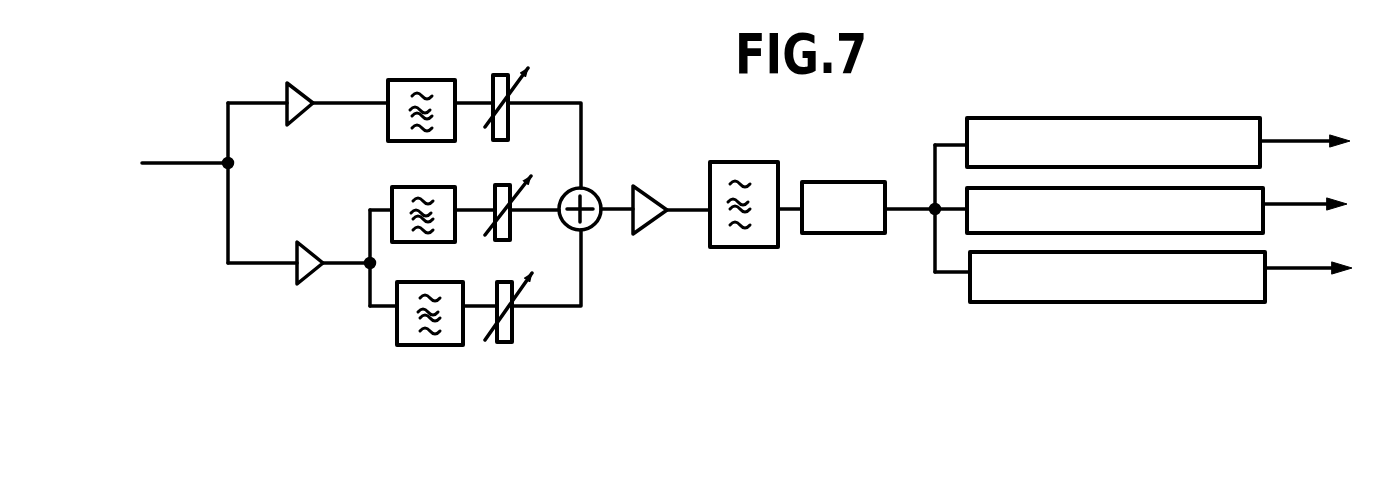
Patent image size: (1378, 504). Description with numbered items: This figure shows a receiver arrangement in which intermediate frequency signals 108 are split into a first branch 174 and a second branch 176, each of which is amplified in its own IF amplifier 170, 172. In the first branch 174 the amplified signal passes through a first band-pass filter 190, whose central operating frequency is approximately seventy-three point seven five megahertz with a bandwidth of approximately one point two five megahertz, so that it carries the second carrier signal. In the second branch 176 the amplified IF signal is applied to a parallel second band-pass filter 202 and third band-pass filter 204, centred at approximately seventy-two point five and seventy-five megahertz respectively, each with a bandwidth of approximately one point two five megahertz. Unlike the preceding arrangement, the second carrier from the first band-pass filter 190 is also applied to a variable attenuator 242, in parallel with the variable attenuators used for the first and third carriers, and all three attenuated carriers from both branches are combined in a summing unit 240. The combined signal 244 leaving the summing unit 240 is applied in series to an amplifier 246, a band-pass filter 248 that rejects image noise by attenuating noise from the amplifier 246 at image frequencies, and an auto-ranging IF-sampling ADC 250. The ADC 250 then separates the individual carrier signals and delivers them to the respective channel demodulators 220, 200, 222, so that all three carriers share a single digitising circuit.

The intermediate frequency signals 108 is at (193, 163).
The IF amplifier 170 is at (287, 88).
The IF amplifier 172 is at (297, 244).
The first branch 174 is at (360, 60).
The second branch 176 is at (335, 263).
The first band-pass filter 190 is at (438, 80).
The second band-pass filter 202 is at (413, 187).
The third band-pass filter 204 is at (400, 345).
The variable attenuator 242 is at (494, 76).
The summing unit 240 is at (595, 183).
The summed signal line 244 is at (609, 212).
The amplifier 246 is at (655, 191).
The band-pass filter 248 is at (753, 162).
The auto-ranging IF-sampling ADC 250 is at (828, 182).
The channel demodulator 220 is at (1113, 118).
The second channel demodulator 200 is at (1247, 188).
The channel demodulator 222 is at (1082, 302).